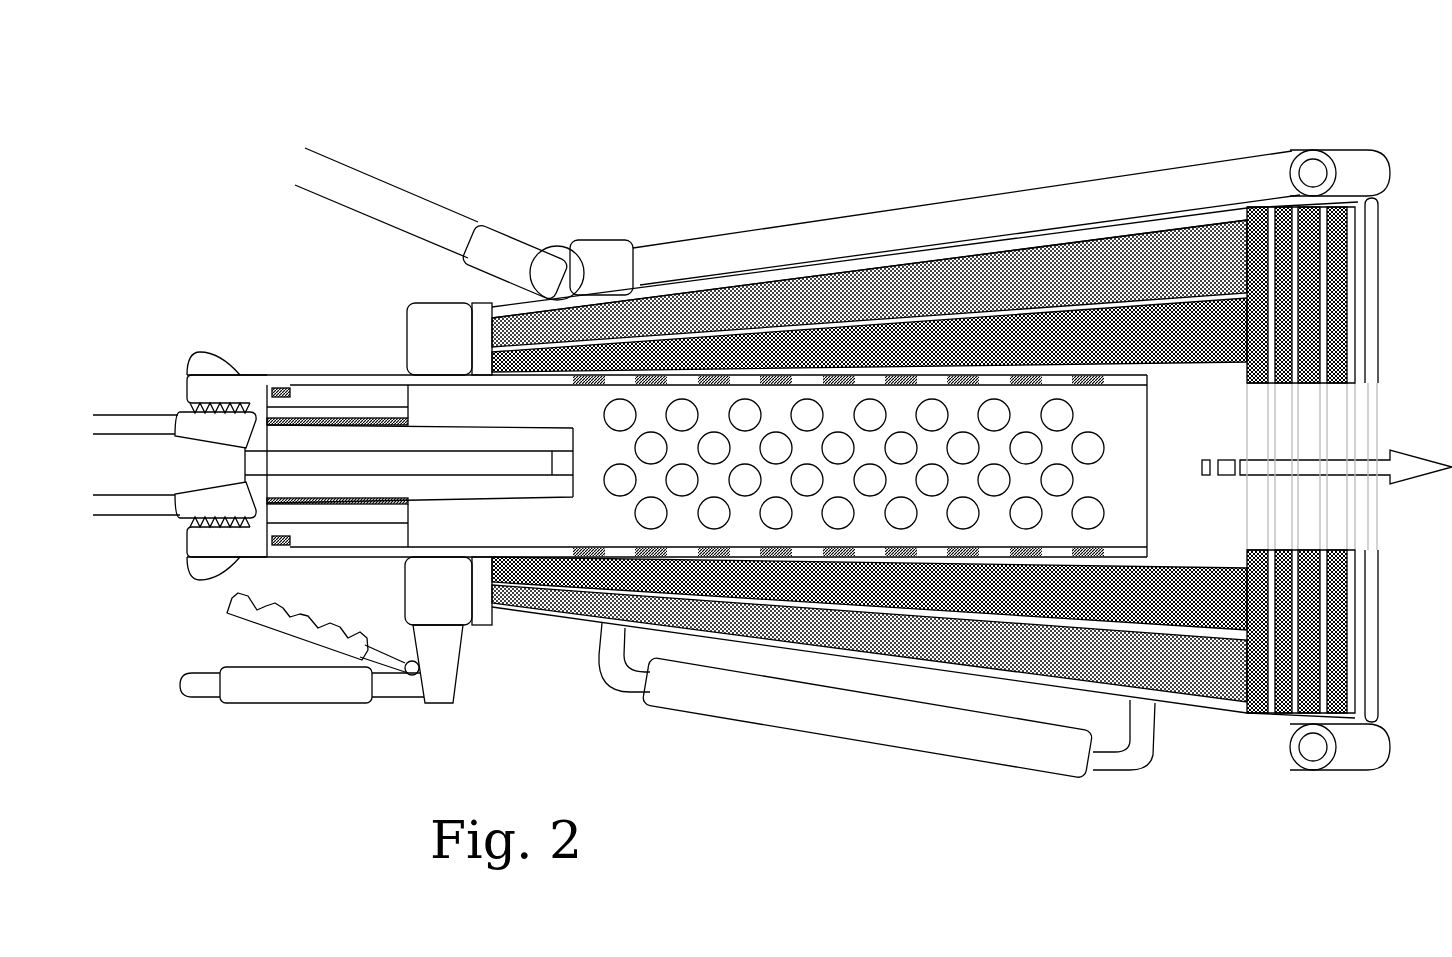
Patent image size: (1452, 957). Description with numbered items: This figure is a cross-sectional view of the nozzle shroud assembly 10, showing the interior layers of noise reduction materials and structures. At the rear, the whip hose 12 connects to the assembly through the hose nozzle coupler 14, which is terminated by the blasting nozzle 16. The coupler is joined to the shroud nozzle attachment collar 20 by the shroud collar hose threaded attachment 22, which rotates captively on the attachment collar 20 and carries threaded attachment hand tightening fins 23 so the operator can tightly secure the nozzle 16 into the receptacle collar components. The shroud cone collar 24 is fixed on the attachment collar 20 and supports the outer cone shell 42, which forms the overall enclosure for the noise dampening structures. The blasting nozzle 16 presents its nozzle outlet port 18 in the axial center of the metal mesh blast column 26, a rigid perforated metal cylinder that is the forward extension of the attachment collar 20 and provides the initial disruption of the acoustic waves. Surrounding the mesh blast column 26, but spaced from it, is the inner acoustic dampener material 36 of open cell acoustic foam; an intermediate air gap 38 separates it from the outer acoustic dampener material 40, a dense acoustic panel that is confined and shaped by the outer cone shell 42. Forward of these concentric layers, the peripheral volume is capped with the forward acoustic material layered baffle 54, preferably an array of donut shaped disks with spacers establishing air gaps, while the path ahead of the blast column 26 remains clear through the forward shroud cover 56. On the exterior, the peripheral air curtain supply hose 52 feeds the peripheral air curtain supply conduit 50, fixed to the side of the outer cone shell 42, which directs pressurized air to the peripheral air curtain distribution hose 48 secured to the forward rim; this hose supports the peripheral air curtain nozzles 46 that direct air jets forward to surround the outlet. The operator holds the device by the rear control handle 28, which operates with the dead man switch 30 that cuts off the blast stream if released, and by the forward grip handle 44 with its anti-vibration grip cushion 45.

The nozzle shroud assembly 10 is at (590, 107).
The whip hose 12 is at (113, 415).
The hose nozzle coupler 14 is at (182, 518).
The blasting nozzle 16 is at (443, 423).
The nozzle outlet port 18 is at (572, 463).
The shroud nozzle attachment collar 20 is at (385, 388).
The shroud collar hose threaded attachment 22 is at (253, 565).
The threaded attachment hand tightening fins 23 is at (190, 360).
The shroud cone collar 24 is at (435, 305).
The metal mesh blast column 26 is at (1150, 478).
The rear control handle 28 is at (200, 698).
The dead man switch 30 is at (253, 623).
The inner acoustic dampener material 36 is at (968, 330).
The intermediate air gap 38 is at (1055, 297).
The outer acoustic dampener material 40 is at (1133, 257).
The outer cone shell 42 is at (1213, 205).
The forward grip handle 44 is at (630, 693).
The anti-vibration grip cushion 45 is at (950, 760).
The peripheral air curtain nozzles 46 is at (1343, 150).
The peripheral air curtain distribution hose 48 is at (1313, 150).
The peripheral air curtain supply conduit 50 is at (740, 230).
The peripheral air curtain supply hose 52 is at (400, 187).
The forward acoustic material layered baffle 54 is at (1260, 715).
The forward shroud cover 56 is at (1378, 612).